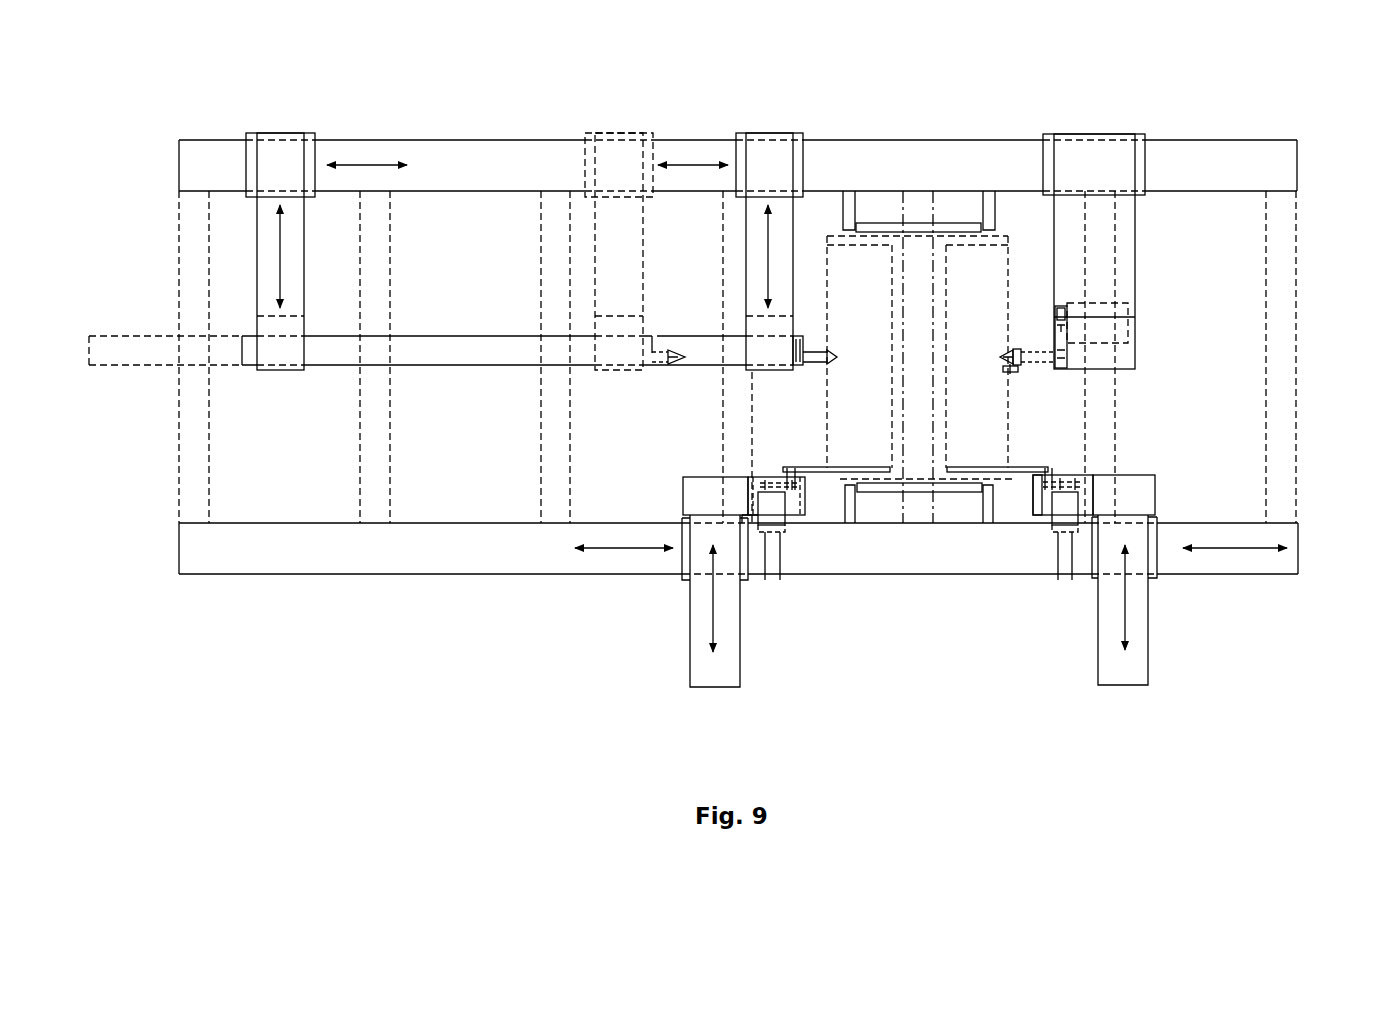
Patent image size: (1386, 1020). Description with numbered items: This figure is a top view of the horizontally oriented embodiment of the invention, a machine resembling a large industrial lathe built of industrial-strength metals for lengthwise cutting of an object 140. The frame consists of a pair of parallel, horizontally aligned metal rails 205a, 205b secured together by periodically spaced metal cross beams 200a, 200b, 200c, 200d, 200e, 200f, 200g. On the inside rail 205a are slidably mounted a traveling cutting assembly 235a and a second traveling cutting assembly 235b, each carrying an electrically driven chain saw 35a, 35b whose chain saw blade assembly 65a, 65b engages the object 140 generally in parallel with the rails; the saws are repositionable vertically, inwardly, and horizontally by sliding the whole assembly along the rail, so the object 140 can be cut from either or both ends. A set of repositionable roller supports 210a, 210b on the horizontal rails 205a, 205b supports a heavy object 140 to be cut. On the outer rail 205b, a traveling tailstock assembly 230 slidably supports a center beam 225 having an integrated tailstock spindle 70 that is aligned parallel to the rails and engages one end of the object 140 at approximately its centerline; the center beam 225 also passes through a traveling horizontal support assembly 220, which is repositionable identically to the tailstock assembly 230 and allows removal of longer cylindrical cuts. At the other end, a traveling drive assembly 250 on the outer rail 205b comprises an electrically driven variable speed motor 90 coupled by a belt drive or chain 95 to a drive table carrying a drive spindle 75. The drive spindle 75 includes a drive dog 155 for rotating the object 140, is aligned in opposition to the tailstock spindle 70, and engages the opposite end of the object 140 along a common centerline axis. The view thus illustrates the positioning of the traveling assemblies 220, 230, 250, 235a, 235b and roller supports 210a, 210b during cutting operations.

The inside horizontal rail 205a is at (679, 560).
The outer horizontal rail 205b is at (682, 130).
The cross beam 200a is at (141, 357).
The cross beam 200b is at (320, 357).
The cross beam 200c is at (492, 357).
The cross beam 200d is at (680, 357).
The cross beam 200e is at (929, 423).
The cross beam 200f is at (1143, 357).
The cross beam 200g is at (1326, 357).
The traveling horizontal support assembly 220 is at (297, 218).
The traveling tailstock assembly 230 is at (712, 218).
The center beam 225 is at (389, 308).
The tailstock spindle 70 is at (762, 329).
The roller support 210a is at (919, 585).
The roller support 210b is at (932, 149).
The object 140 is at (958, 273).
The traveling drive assembly 250 is at (1110, 221).
The electrically driven variable speed motor 90 is at (1120, 292).
The belt drive or chain 95 is at (1077, 300).
The drive spindle 75 is at (1027, 330).
The drive dog 155 is at (1040, 388).
The chain saw blade assembly 65a is at (836, 547).
The chain saw blade assembly 65b is at (987, 547).
The chain saw 35a is at (773, 567).
The second chain saw 35b is at (1043, 551).
The traveling cutting assembly 235a is at (678, 612).
The second traveling cutting assembly 235b is at (1169, 611).